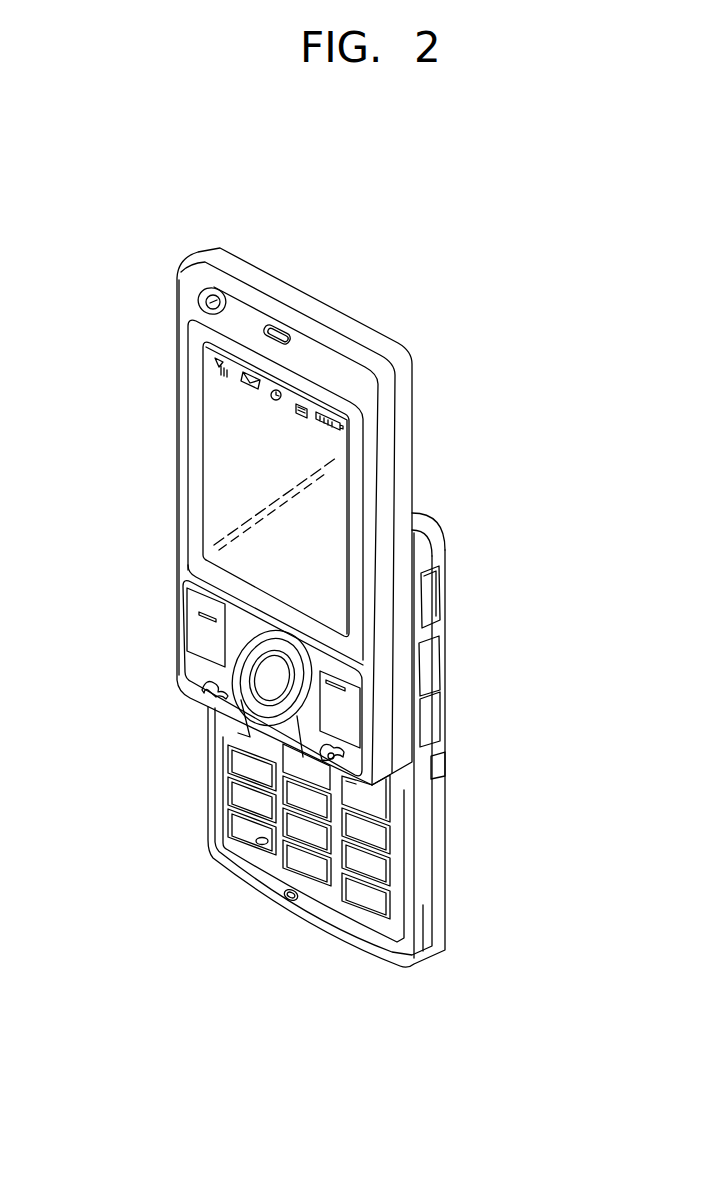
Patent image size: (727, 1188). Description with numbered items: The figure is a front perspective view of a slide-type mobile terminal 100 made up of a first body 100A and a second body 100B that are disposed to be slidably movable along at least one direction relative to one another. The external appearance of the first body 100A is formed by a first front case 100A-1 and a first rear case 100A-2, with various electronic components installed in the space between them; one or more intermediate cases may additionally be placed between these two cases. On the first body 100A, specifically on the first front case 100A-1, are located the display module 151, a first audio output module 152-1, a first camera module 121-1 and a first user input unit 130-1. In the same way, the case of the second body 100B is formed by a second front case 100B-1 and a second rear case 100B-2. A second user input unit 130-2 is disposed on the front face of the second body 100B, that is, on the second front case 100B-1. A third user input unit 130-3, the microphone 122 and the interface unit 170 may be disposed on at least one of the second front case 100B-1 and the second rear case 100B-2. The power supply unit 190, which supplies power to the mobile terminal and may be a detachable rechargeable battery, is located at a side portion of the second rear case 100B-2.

The mobile terminal 100 is at (435, 283).
The first body 100A is at (148, 362).
The first front case 100A-1 is at (385, 418).
The first rear case 100A-2 is at (405, 397).
The second body 100B is at (204, 773).
The second front case 100B-1 is at (423, 555).
The second rear case 100B-2 is at (430, 530).
The first camera module 121-1 is at (211, 300).
The microphone 122 is at (289, 904).
The first user input unit 130-1 is at (196, 638).
The second user input unit 130-2 is at (232, 818).
The third user input unit 130-3 is at (430, 715).
The display module 151 is at (217, 445).
The first audio output module 152-1 is at (276, 327).
The interface unit 170 is at (432, 592).
The power supply unit 190 is at (443, 857).